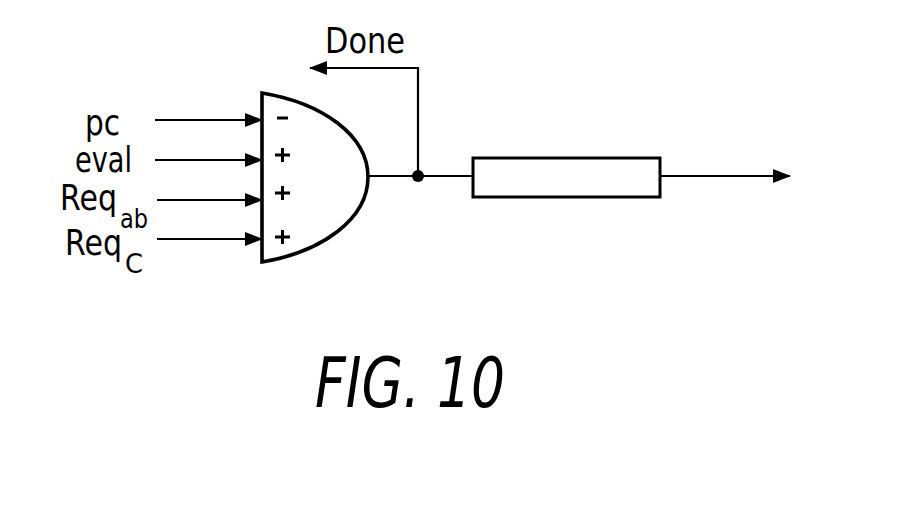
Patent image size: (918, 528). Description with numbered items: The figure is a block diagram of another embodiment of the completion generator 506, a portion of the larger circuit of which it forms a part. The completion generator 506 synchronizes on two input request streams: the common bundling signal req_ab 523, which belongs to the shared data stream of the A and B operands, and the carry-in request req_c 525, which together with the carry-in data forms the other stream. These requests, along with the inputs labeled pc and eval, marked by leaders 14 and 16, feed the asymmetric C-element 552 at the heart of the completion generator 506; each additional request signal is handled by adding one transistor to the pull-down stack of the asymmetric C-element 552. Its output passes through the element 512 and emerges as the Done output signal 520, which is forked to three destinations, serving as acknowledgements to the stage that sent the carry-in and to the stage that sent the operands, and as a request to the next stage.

The pc input signal line 14 is at (165, 119).
The eval input signal line 16 is at (208, 160).
The req_ab bundling signal 523 is at (187, 201).
The carry-in req_c 525 is at (222, 240).
The asymmetric C-element 552 is at (360, 217).
The Done output signal 520 is at (418, 88).
The delay element 512 is at (555, 198).
The completion generator 506 is at (677, 80).